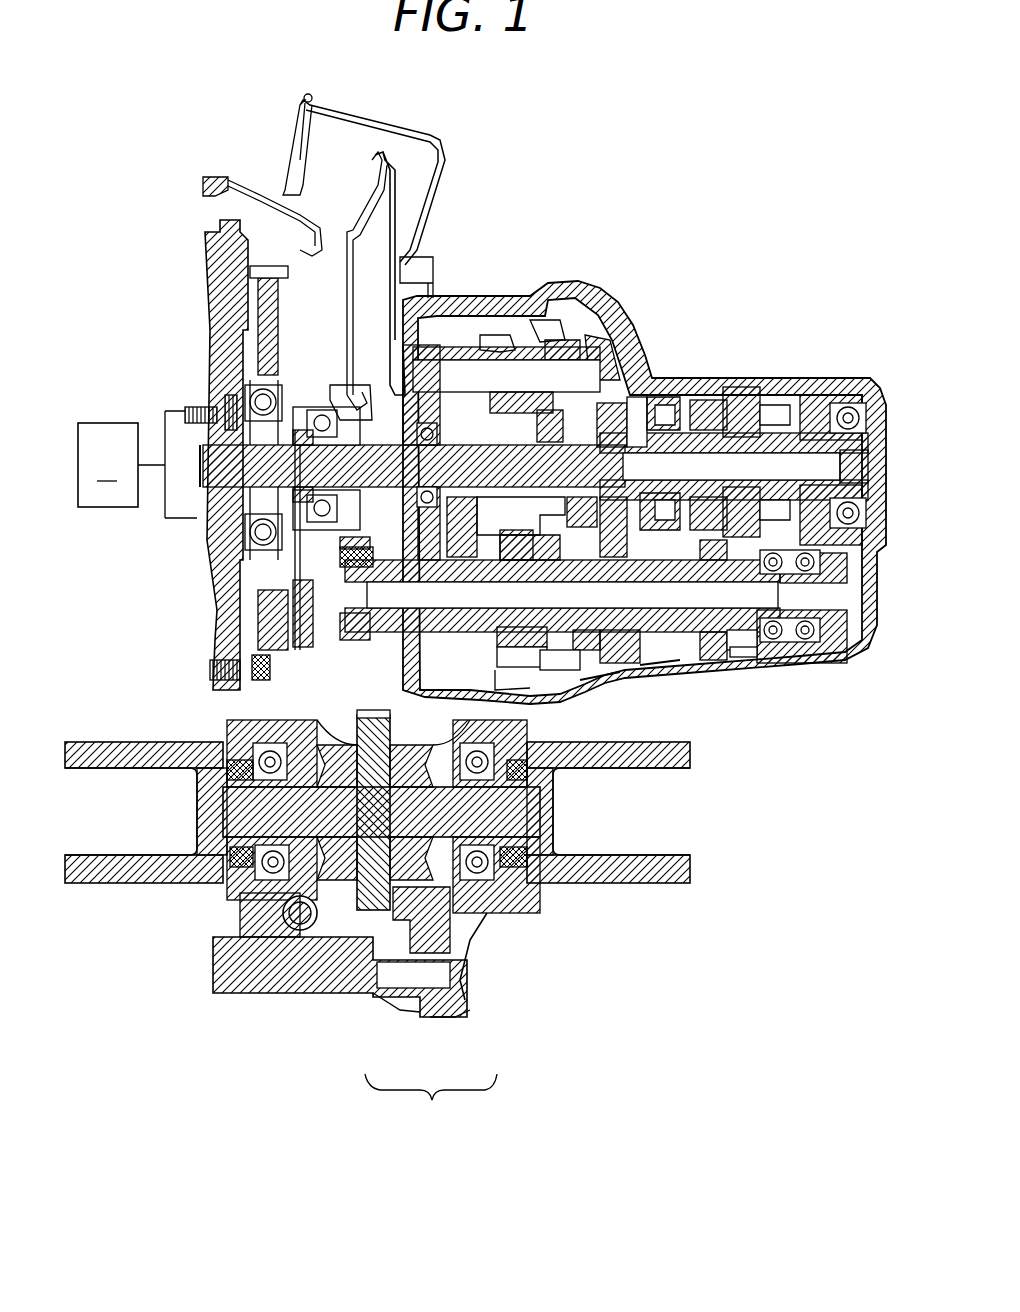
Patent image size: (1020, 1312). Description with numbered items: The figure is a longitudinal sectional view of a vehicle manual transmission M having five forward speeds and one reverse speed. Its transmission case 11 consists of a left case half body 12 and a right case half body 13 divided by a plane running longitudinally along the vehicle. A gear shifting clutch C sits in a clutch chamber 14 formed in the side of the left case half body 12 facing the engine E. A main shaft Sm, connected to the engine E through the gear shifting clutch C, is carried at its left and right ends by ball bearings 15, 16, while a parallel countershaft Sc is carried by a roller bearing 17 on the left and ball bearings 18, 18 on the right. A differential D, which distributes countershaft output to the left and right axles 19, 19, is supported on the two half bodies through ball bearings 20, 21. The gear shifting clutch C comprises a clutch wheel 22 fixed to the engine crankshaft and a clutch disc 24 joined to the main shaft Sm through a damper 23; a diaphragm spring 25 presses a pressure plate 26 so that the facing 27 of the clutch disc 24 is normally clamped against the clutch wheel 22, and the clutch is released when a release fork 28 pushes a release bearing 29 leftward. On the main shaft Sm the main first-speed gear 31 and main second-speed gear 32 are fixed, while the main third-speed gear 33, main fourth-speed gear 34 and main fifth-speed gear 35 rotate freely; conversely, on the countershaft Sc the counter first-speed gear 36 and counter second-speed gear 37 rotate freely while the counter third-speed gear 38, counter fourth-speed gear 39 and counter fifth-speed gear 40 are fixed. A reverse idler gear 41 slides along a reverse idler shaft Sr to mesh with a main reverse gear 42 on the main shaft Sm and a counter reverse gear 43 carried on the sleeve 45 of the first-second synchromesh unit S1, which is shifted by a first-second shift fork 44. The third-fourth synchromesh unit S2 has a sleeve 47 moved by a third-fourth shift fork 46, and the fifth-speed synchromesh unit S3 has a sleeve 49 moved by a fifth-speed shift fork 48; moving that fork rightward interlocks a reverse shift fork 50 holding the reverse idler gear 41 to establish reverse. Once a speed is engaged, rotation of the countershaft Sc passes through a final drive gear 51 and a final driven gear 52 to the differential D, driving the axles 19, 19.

The transmission case 11 is at (431, 1106).
The left case half body 12 is at (393, 1008).
The right case half body 13 is at (455, 1012).
The clutch chamber 14 is at (333, 281).
The ball bearing 15 is at (428, 502).
The ball bearing 16 is at (850, 408).
The roller bearing 17 is at (372, 722).
The ball bearings 18 is at (800, 660).
The axles 19 is at (150, 870).
The ball bearing 20 is at (258, 902).
The ball bearing 21 is at (480, 870).
The clutch wheel 22 is at (220, 628).
The damper 23 is at (215, 380).
The clutch disc 24 is at (232, 598).
The diaphragm spring 25 is at (305, 410).
The pressure plate 26 is at (262, 682).
The facing 27 is at (245, 295).
The release fork 28 is at (350, 235).
The release bearing 29 is at (250, 532).
The main first-speed gear 31 is at (506, 394).
The main second-speed gear 32 is at (608, 430).
The main third-speed gear 33 is at (620, 410).
The main fourth-speed gear 34 is at (712, 400).
The main fifth-speed gear 35 is at (748, 395).
The counter first-speed gear 36 is at (512, 690).
The counter second-speed gear 37 is at (598, 694).
The counter third-speed gear 38 is at (655, 678).
The counter fourth-speed gear 39 is at (712, 662).
The counter fifth-speed gear 40 is at (745, 655).
The reverse idler gear 41 is at (558, 345).
The main reverse gear 42 is at (570, 500).
The counter reverse gear 43 is at (505, 505).
The first-second shift fork 44 is at (578, 565).
The sleeve 45 is at (525, 632).
The third-fourth shift fork 46 is at (668, 560).
The sleeve 47 is at (655, 548).
The fifth-speed shift fork 48 is at (822, 395).
The sleeve 49 is at (745, 466).
The reverse shift fork 50 is at (573, 345).
The final drive gear 51 is at (428, 560).
The final driven gear 52 is at (440, 985).
The gear shifting clutch C is at (200, 332).
The differential D is at (333, 718).
The engine E is at (137, 464).
The vehicle manual transmission M is at (615, 255).
The main shaft Sm is at (492, 479).
The countershaft Sc is at (495, 609).
The reverse idler shaft Sr is at (600, 378).
The first-second synchromesh unit S1 is at (569, 690).
The third-fourth synchromesh unit S2 is at (683, 398).
The fifth-speed synchromesh unit S3 is at (772, 405).